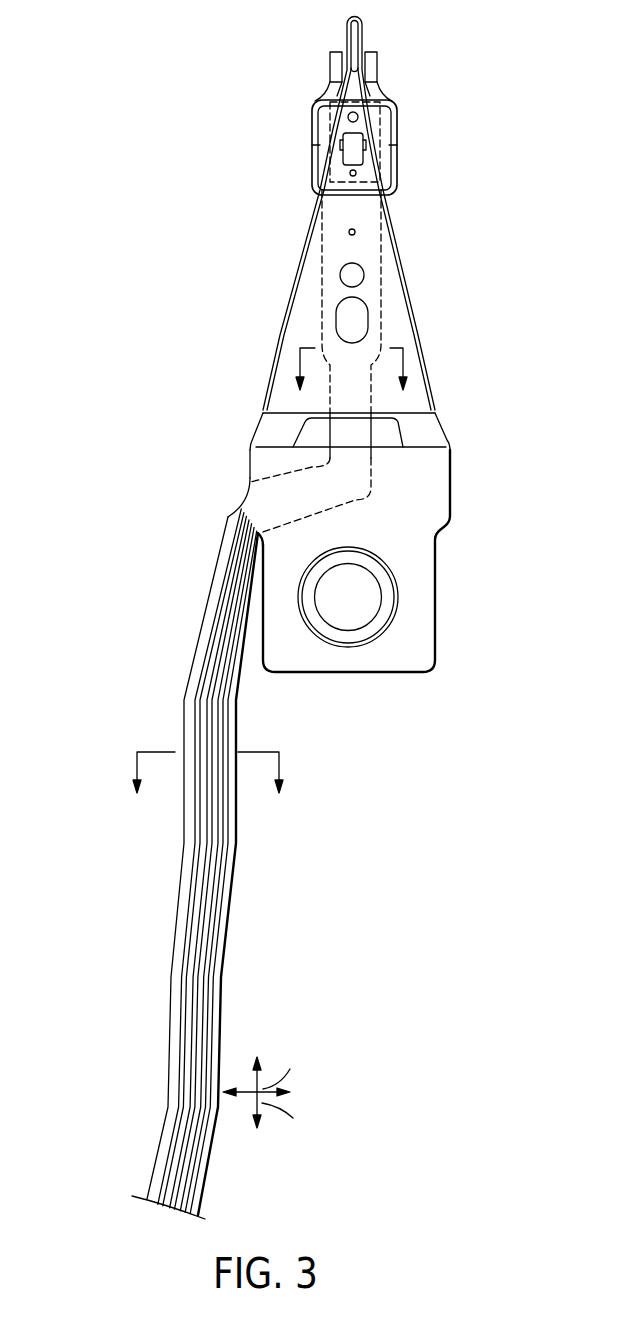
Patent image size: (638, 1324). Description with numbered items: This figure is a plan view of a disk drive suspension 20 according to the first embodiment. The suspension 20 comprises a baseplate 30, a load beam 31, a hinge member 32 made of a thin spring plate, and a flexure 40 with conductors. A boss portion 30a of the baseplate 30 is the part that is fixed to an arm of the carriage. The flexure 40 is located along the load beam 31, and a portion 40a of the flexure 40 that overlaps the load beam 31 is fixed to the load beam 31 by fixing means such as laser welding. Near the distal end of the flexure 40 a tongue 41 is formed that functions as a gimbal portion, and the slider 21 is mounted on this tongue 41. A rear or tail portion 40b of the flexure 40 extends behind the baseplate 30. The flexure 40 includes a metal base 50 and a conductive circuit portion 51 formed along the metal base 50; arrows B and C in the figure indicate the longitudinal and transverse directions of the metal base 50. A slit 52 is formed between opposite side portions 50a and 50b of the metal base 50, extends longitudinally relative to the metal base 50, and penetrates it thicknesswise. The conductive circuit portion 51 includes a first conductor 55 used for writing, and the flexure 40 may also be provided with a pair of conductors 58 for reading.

The suspension 20 is at (208, 239).
The slider 21 is at (360, 124).
The baseplate 30 is at (390, 561).
The boss portion 30a is at (387, 612).
The load beam 31 is at (405, 339).
The hinge member 32 is at (437, 430).
The flexure 40 is at (341, 317).
The portion of the flexure 40a is at (330, 315).
The rear portion 40b is at (182, 698).
The tongue 41 is at (352, 142).
The metal base 50 is at (199, 848).
The side portion 50a is at (179, 928).
The side portion 50b is at (227, 927).
The conductive circuit portion 51 is at (181, 872).
The slit 52 is at (190, 973).
The first conductor 55 is at (185, 1002).
The conductors for reading 58 is at (205, 998).